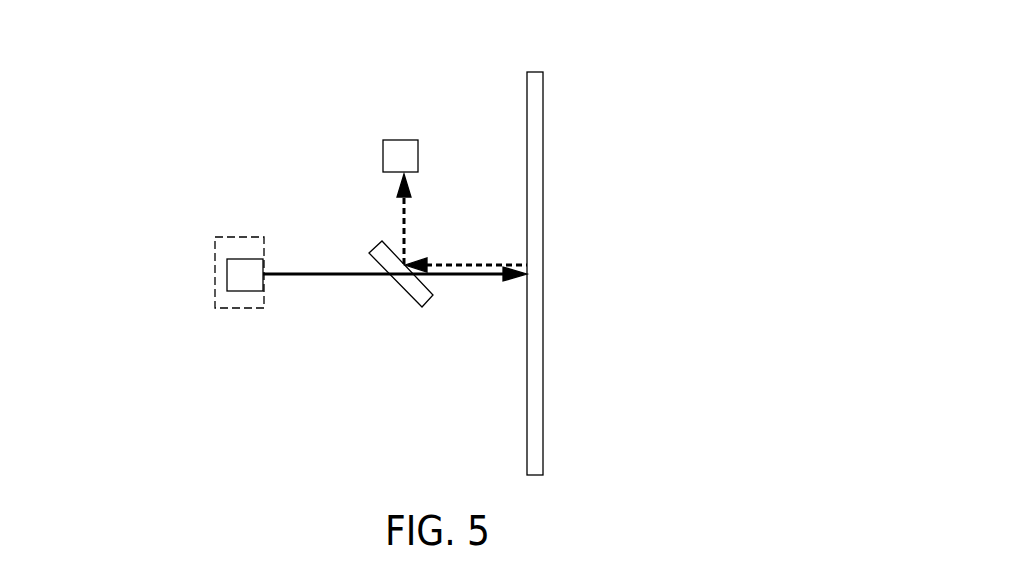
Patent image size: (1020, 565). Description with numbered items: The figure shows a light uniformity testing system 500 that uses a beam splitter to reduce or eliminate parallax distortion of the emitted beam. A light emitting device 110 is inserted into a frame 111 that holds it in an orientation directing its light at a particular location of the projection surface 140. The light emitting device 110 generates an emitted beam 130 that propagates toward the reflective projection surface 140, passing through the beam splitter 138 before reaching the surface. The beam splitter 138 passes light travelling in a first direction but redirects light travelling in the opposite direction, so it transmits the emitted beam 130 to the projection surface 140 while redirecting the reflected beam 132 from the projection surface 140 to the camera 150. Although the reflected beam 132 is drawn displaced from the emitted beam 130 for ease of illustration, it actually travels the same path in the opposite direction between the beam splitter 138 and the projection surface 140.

The light emitting device 110 is at (245, 291).
The frame 111 is at (215, 260).
The emitted beam 130 is at (370, 277).
The reflected beam 132 is at (488, 263).
The beam splitter 138 is at (382, 247).
The projection surface 140 is at (543, 92).
The camera 150 is at (383, 150).
The light uniformity testing system 500 is at (628, 40).